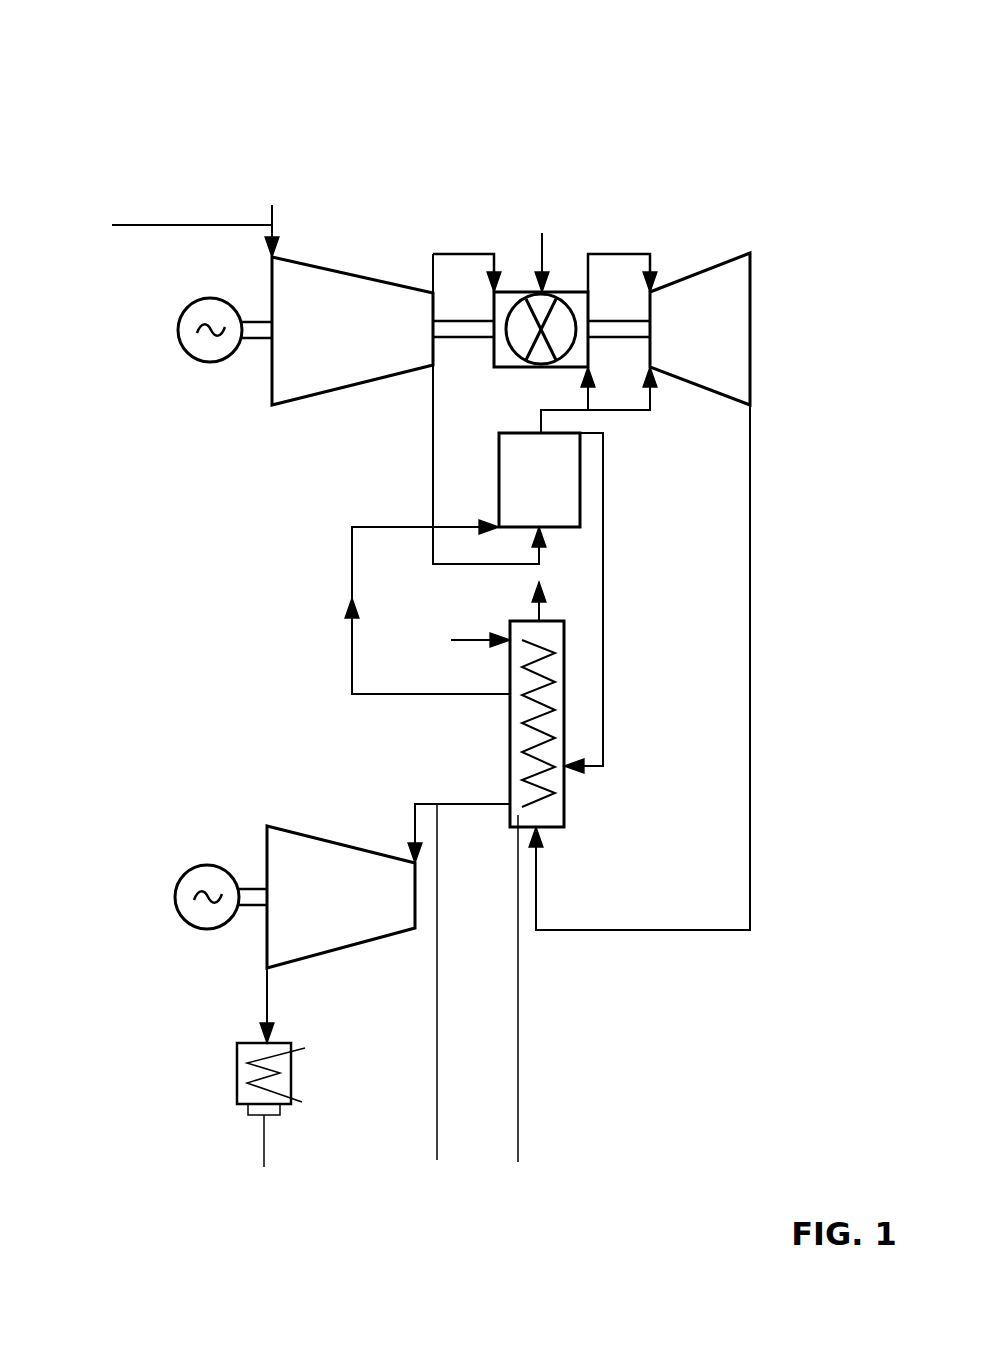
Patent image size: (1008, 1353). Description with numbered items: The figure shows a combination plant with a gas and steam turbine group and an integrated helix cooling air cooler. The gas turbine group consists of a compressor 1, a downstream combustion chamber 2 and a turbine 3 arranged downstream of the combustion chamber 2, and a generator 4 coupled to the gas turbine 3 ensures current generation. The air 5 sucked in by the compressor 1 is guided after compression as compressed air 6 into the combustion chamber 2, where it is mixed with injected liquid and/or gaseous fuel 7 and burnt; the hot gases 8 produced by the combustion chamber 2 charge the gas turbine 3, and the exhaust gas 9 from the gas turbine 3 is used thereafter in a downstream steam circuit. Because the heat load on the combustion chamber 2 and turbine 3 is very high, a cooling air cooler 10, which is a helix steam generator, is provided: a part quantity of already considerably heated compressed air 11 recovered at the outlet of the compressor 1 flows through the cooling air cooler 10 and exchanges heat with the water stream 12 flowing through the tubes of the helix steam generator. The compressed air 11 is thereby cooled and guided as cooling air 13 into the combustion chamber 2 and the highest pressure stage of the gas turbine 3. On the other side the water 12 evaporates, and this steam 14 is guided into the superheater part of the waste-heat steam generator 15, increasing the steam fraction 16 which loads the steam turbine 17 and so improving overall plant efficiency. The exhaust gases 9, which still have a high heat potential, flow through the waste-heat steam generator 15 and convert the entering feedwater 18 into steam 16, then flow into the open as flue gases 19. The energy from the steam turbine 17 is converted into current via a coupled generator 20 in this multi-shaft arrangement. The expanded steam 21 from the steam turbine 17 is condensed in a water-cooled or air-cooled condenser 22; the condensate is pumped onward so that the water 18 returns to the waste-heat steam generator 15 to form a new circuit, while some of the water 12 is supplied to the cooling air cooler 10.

The compressor 1 is at (343, 292).
The combustion chamber 2 is at (572, 300).
The turbine 3 is at (728, 329).
The generator 4 is at (191, 327).
The air 5 is at (180, 231).
The compressed air 6 is at (463, 255).
The fuel 7 is at (528, 156).
The hot gases 8 is at (628, 253).
The exhaust gas 9 is at (750, 761).
The cooling air cooler 10 is at (550, 478).
The compressed air 11 is at (432, 473).
The water stream 12 is at (352, 560).
The cooling air 13 is at (539, 416).
The steam 14 is at (603, 546).
The waste-heat steam generator 15 is at (513, 1008).
The steam 16 is at (459, 1003).
The steam turbine 17 is at (238, 897).
The feedwater 18 is at (313, 724).
The flue gases 19 is at (715, 625).
The generator 20 is at (194, 912).
The expanded steam 21 is at (259, 1005).
The condenser 22 is at (245, 1097).